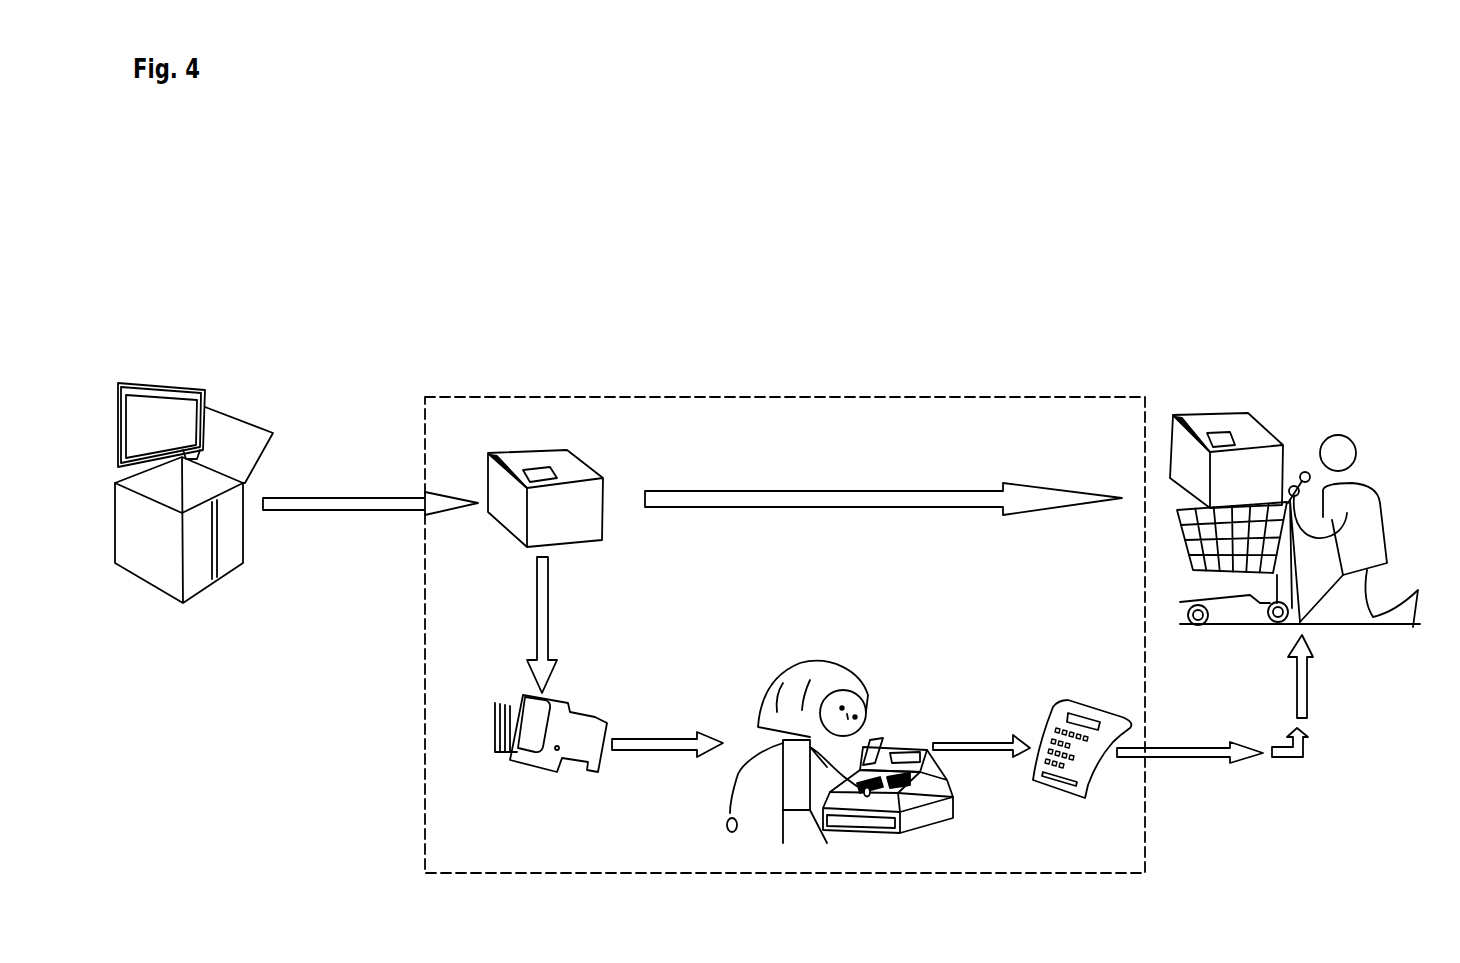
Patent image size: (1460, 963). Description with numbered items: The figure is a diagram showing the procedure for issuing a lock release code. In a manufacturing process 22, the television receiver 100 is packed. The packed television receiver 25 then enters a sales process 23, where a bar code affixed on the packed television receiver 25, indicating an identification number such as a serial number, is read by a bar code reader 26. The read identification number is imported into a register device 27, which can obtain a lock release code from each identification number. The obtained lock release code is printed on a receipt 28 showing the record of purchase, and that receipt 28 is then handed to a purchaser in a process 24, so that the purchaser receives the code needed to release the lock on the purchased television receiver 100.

The manufacturing process 22 is at (212, 350).
The television receiver 100 is at (207, 403).
The sales process 23 is at (790, 396).
The process 24 is at (1328, 402).
The packed television receiver 25 is at (243, 483).
The bar code reader 26 is at (567, 695).
The register device 27 is at (900, 747).
The receipt 28 is at (1080, 700).